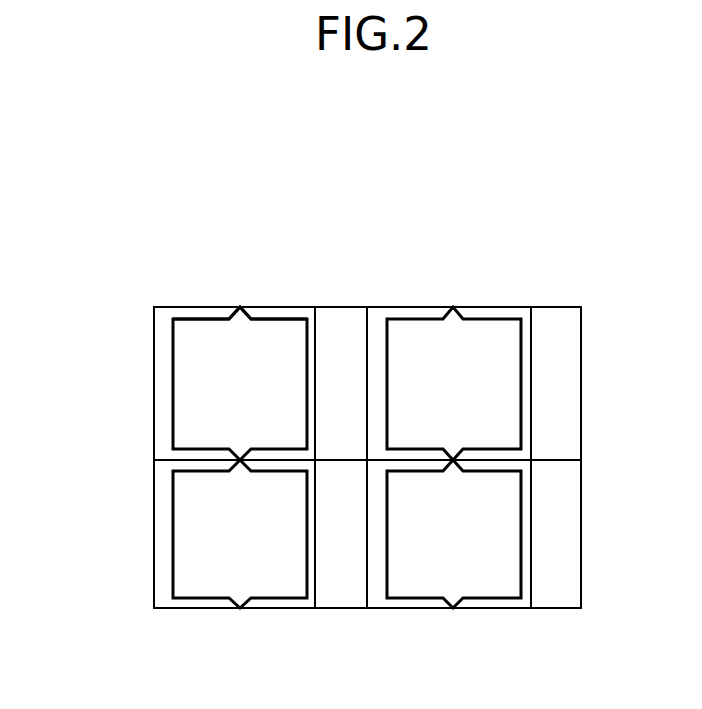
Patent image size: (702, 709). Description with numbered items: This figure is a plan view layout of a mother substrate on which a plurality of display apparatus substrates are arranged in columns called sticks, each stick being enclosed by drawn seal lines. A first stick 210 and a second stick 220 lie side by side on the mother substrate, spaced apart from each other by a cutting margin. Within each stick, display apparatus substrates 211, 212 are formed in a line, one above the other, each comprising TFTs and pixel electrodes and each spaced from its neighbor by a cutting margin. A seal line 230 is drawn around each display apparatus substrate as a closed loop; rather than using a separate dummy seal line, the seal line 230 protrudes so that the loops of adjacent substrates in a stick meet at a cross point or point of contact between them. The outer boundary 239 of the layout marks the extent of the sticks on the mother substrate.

The first stick 210 is at (283, 272).
The second stick 220 is at (497, 272).
The seal line 230 is at (201, 319).
The boundary line 239 is at (154, 333).
The display apparatus substrate 211 is at (205, 386).
The display apparatus substrate 212 is at (207, 533).